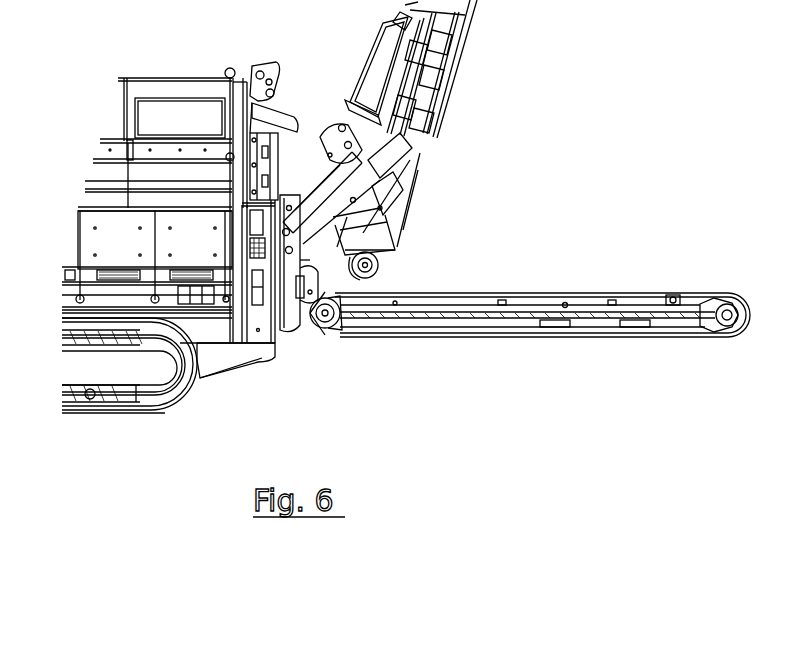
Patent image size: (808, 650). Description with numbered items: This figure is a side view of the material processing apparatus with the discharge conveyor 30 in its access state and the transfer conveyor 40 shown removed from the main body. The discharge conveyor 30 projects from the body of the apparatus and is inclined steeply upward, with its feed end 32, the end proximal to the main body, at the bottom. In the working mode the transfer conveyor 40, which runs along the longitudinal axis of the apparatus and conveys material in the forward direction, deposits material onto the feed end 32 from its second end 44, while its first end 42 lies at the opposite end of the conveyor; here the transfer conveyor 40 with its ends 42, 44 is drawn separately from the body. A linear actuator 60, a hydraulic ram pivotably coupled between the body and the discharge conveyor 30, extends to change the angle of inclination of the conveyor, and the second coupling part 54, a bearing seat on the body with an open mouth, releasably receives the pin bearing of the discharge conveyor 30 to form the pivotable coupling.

The discharge conveyor 30 is at (458, 72).
The first end 32 is at (378, 278).
The transfer conveyor 40 is at (600, 292).
The first end 42 is at (330, 330).
The second end 44 is at (736, 300).
The second coupling part 54 is at (299, 302).
The linear actuator 60 is at (324, 196).